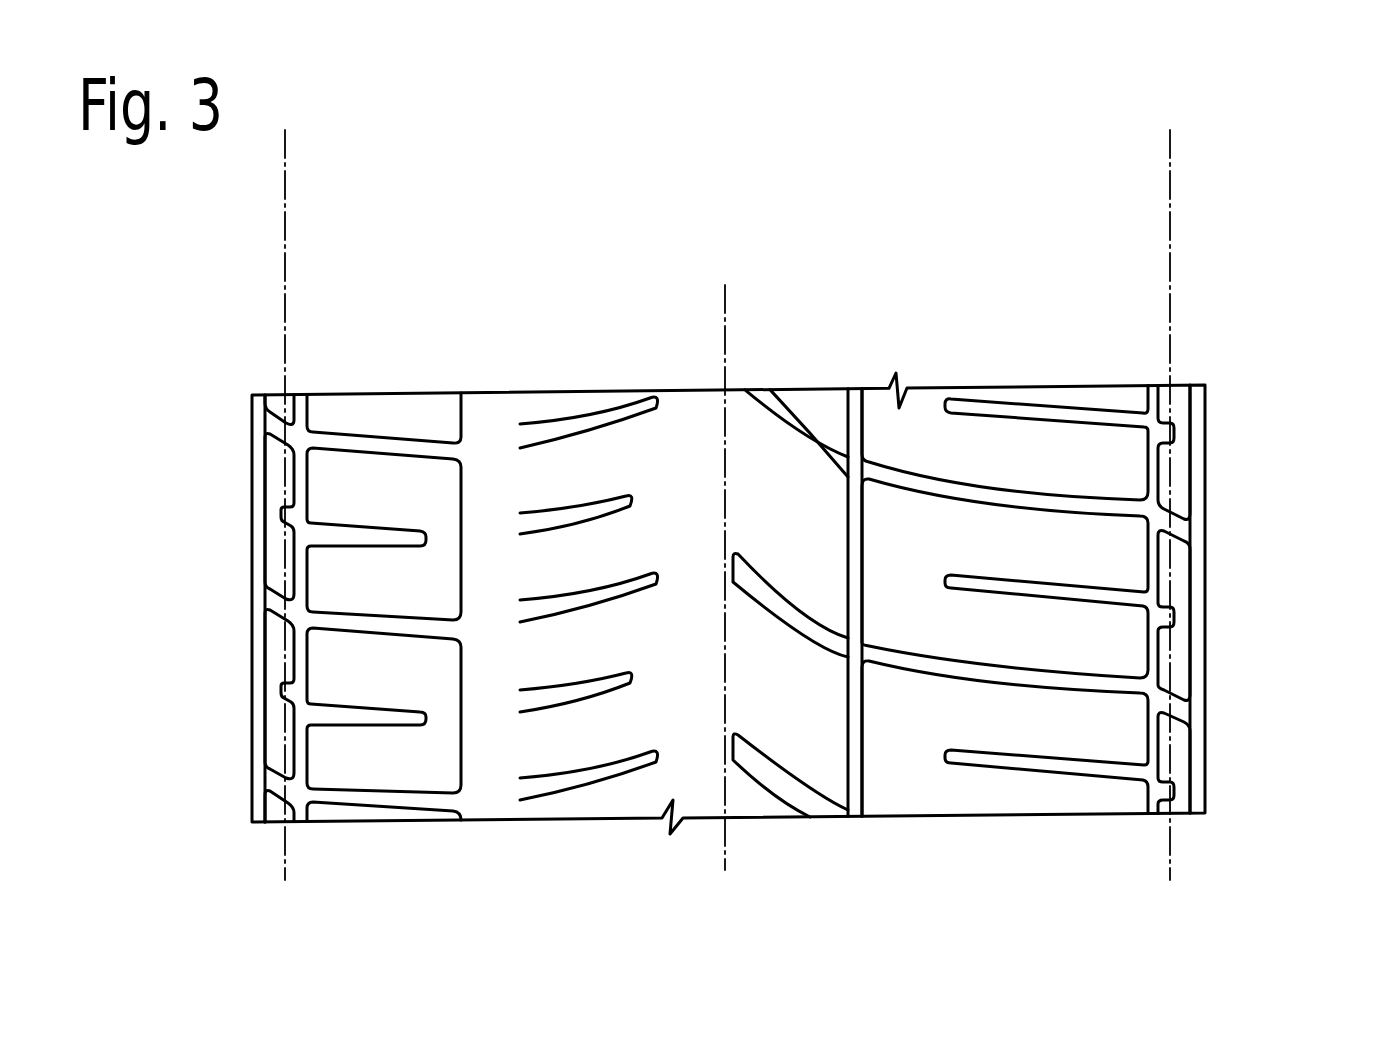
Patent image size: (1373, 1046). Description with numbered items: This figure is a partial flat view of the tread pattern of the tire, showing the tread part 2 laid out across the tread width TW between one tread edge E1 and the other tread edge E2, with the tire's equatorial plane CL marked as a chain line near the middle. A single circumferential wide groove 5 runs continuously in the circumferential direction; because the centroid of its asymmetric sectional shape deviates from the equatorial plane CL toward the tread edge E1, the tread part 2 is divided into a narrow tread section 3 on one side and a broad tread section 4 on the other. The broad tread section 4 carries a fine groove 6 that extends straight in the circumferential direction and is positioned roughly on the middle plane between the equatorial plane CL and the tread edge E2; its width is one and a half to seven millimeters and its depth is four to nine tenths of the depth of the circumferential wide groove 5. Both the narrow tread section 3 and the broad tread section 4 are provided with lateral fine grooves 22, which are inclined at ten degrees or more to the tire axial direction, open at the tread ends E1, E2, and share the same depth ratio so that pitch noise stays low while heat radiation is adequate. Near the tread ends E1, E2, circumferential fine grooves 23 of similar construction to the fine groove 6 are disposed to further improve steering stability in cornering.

The tread part 2 is at (597, 253).
The narrow tread section 3 is at (361, 413).
The broad tread section 4 is at (797, 407).
The circumferential wide groove 5 is at (470, 740).
The fine groove 6 is at (853, 752).
The lateral fine grooves 22 is at (565, 430).
The circumferential fine grooves 23 is at (1157, 475).
The tread edge E1 is at (290, 563).
The tread edge E2 is at (1175, 568).
The tire's equatorial plane CL is at (728, 850).
The tread width TW is at (1155, 150).